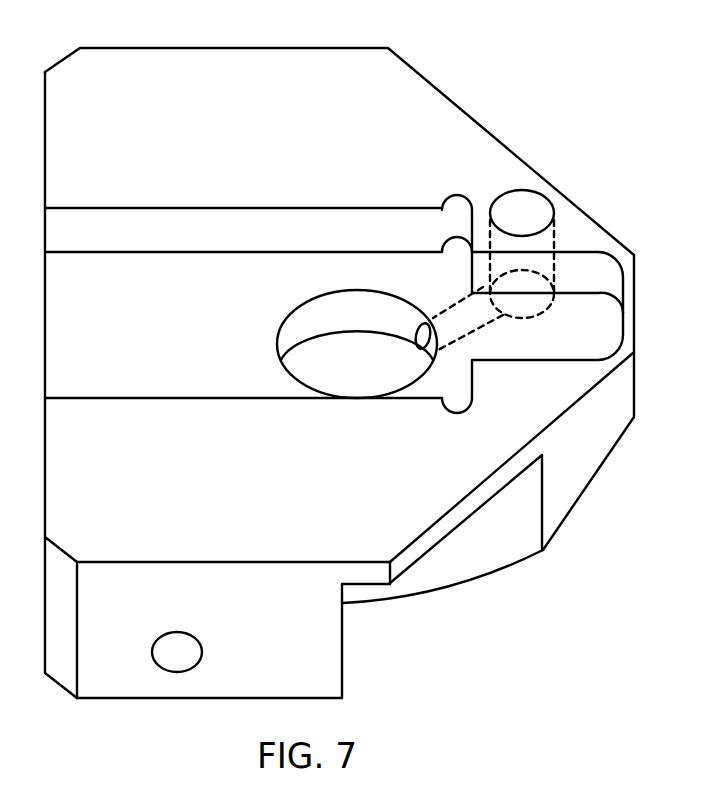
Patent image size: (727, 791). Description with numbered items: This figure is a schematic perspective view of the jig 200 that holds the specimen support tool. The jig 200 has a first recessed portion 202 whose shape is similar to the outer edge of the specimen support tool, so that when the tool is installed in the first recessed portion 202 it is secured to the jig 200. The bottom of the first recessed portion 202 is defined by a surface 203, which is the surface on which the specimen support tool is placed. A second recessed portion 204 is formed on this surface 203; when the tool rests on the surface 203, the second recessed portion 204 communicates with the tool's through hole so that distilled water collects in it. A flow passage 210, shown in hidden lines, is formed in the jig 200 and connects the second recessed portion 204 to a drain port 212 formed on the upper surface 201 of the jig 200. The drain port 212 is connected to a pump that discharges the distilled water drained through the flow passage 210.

The jig 200 is at (492, 52).
The upper surface 201 is at (295, 152).
The first recessed portion 202 is at (211, 240).
The surface 203 is at (130, 282).
The second recessed portion 204 is at (368, 343).
The flow passage 210 is at (547, 243).
The drain port 212 is at (530, 200).